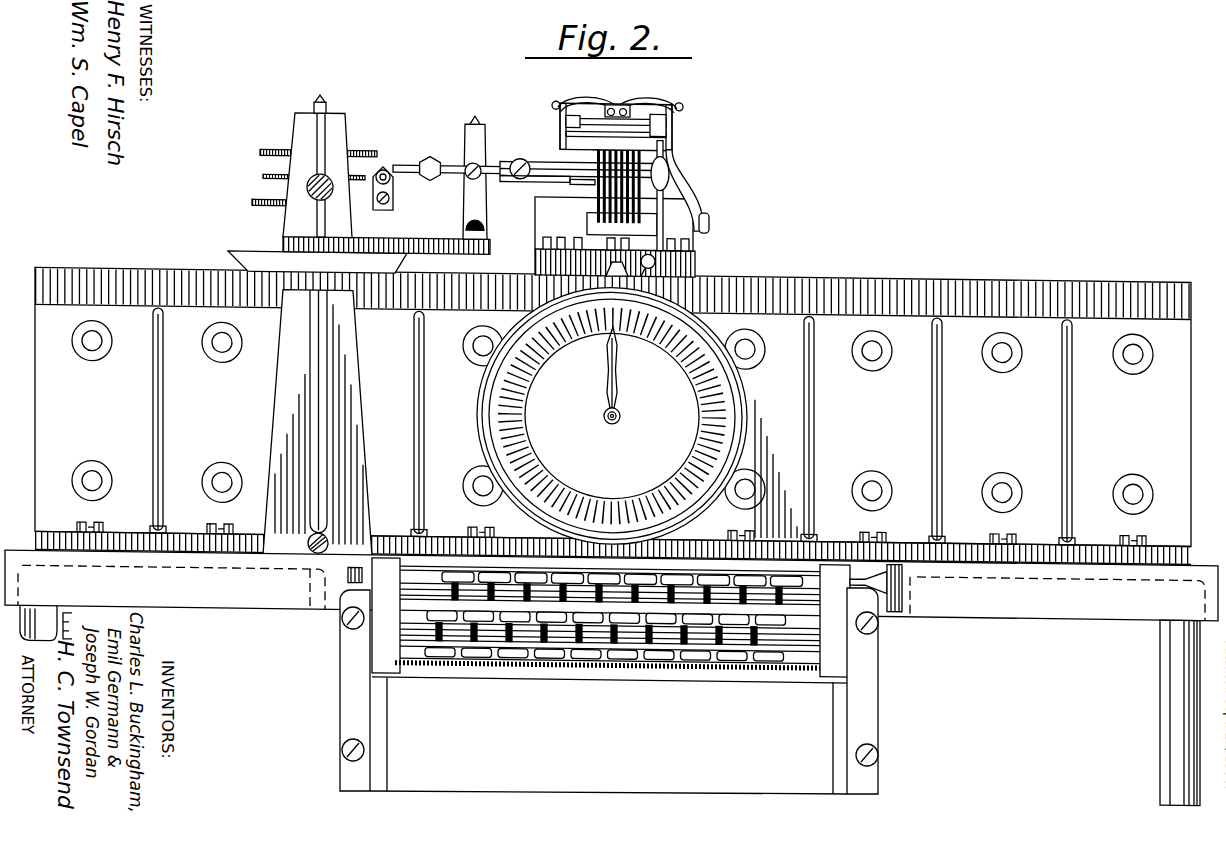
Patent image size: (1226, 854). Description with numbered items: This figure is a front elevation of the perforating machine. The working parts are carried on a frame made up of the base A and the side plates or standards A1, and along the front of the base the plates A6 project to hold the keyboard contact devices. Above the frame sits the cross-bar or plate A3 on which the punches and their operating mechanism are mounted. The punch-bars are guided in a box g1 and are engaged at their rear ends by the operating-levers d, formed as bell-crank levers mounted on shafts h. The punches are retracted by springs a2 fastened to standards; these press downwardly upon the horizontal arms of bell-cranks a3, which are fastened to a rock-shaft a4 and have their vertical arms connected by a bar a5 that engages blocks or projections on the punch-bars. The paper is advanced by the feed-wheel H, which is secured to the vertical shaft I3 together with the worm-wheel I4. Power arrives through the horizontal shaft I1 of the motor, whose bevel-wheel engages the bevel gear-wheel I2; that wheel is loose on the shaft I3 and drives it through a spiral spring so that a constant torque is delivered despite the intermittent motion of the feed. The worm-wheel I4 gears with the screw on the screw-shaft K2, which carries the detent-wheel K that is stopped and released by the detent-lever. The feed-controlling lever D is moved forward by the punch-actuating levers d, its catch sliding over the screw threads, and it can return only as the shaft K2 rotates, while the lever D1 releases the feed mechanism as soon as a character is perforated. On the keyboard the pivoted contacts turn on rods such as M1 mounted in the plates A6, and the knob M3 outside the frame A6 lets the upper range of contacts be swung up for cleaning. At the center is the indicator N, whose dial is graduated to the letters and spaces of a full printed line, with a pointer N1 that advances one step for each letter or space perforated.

The base A is at (611, 678).
The side plates or standards A1 is at (923, 256).
The cross-bar or plate A3 is at (696, 253).
The plates A6 is at (611, 620).
The feed-controlling lever D is at (562, 157).
The lever D1 is at (538, 176).
The operating-levers d is at (596, 142).
The box g1 is at (595, 175).
The feed-wheel H is at (283, 150).
The shafts h is at (641, 214).
The horizontal shaft I1 is at (326, 194).
The bevel gear-wheel I2 is at (251, 201).
The vertical shaft I3 is at (324, 100).
The worm-wheel I4 is at (262, 174).
The detent-wheel K is at (392, 177).
The screw-shaft K2 is at (664, 142).
The rods M1 is at (347, 572).
The knob M3 is at (903, 578).
The indicator N is at (612, 416).
The pointer N1 is at (617, 400).
The springs a2 is at (592, 96).
The bell-cranks a3 is at (561, 118).
The rock-shaft a4 is at (652, 106).
The bar a5 is at (568, 134).